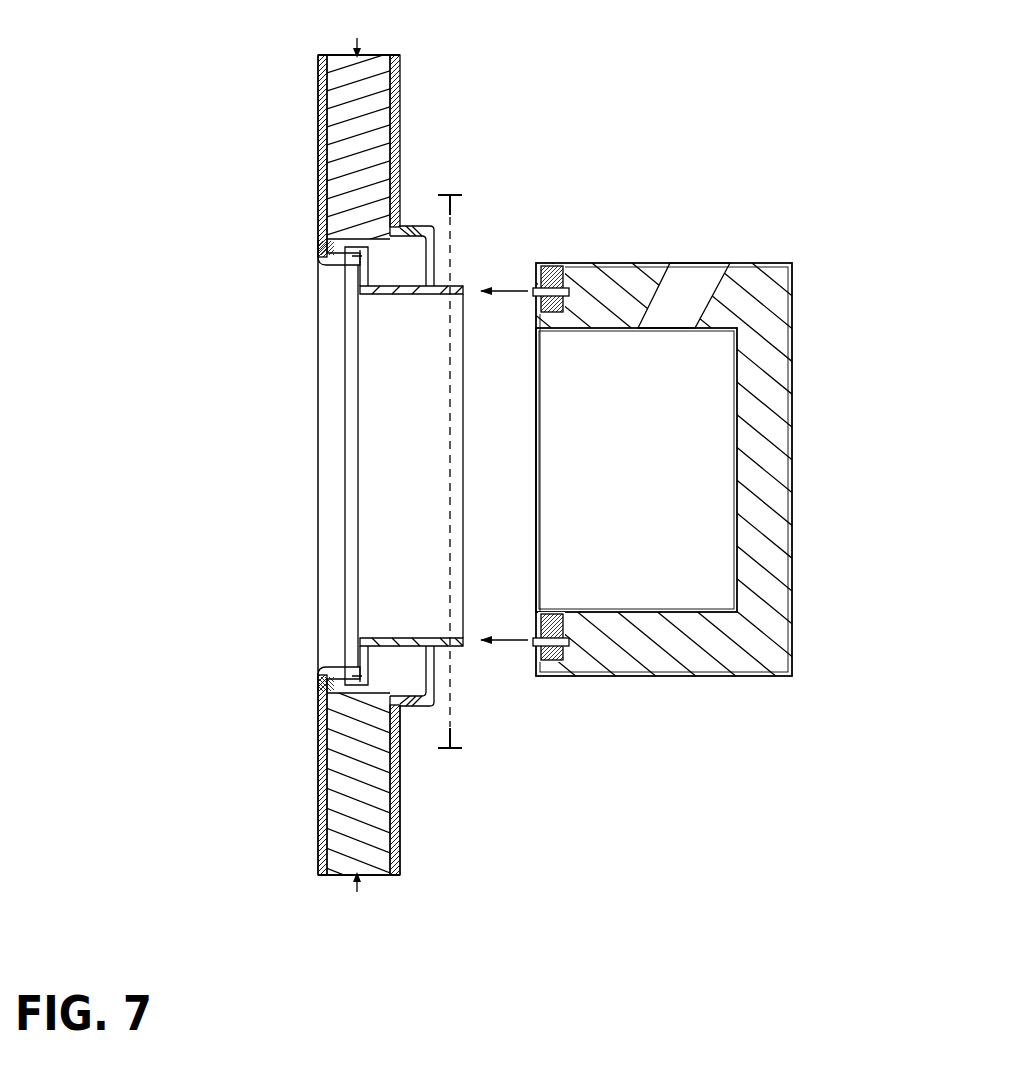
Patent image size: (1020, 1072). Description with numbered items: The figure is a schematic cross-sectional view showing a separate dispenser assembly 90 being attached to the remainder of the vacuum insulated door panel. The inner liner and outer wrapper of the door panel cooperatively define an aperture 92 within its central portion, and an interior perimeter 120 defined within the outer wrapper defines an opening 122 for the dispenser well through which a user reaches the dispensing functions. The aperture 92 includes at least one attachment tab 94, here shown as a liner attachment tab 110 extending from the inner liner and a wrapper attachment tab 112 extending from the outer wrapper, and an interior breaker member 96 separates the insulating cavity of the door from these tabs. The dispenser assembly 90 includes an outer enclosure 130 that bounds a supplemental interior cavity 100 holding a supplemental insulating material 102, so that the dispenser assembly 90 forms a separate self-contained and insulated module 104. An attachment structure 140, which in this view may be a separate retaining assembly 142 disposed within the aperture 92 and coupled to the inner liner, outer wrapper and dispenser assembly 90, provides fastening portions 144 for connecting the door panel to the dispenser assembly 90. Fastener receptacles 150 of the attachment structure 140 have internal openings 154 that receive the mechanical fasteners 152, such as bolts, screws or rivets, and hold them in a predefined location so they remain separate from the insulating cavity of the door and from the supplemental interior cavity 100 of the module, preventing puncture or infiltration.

The dispenser assembly 90 is at (698, 703).
The aperture 92 is at (318, 305).
The attachment tab 94 is at (332, 667).
The interior breaker member 96 is at (357, 239).
The supplemental interior cavity 100 is at (768, 348).
The supplemental insulating material 102 is at (760, 410).
The self-contained and insulated module 104 is at (797, 525).
The liner attachment tab 110 is at (405, 228).
The wrapper attachment tab 112 is at (334, 262).
The interior perimeter 120 is at (318, 441).
The opening 122 is at (338, 513).
The outer enclosure 130 is at (790, 620).
The attachment structure 140 is at (400, 630).
The separate retaining assembly 142 is at (423, 214).
The fastening portion 144 is at (445, 304).
The fastener receptacle 150 is at (554, 242).
The mechanical fastener 152 is at (452, 205).
The internal opening 154 is at (581, 258).